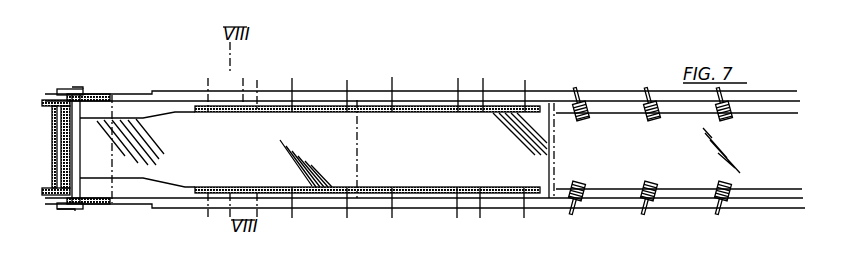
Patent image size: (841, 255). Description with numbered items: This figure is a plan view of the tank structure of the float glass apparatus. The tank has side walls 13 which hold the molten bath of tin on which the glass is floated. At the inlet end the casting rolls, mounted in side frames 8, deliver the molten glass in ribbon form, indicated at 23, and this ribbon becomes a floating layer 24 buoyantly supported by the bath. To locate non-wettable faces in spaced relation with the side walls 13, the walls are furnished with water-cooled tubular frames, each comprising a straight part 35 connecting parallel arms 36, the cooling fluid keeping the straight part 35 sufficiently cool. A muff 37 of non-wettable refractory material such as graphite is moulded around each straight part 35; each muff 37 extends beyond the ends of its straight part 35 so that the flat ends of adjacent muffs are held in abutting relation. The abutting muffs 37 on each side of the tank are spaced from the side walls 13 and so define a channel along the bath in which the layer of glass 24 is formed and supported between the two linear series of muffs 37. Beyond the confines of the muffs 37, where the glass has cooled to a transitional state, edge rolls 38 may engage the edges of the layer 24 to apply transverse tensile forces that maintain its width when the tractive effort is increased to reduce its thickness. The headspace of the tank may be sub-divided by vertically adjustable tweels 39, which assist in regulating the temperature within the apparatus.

The side frames 8 is at (95, 93).
The side walls 13 is at (178, 91).
The ribbon 23 is at (104, 155).
The floating layer 24 is at (218, 155).
The straight part 35 is at (244, 76).
The parallel arms 36 is at (207, 76).
The muff 37 is at (317, 106).
The edge rolls 38 is at (650, 103).
The tweels 39 is at (118, 93).